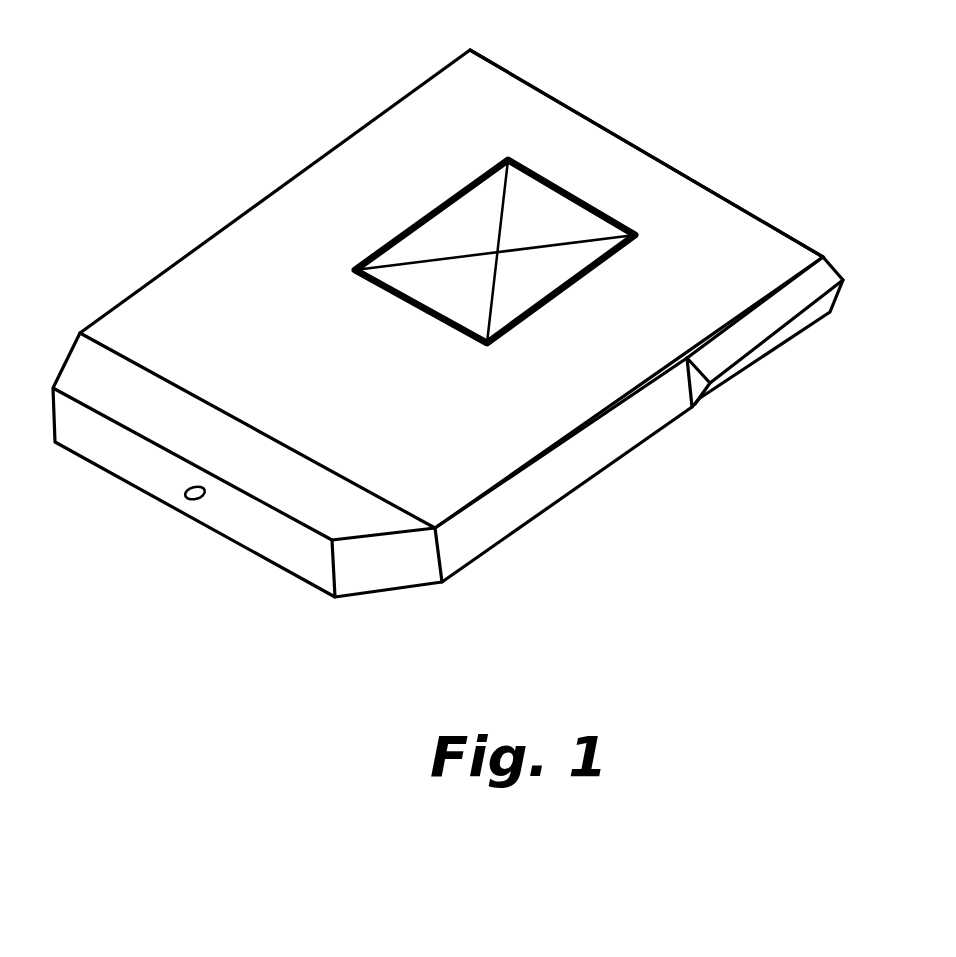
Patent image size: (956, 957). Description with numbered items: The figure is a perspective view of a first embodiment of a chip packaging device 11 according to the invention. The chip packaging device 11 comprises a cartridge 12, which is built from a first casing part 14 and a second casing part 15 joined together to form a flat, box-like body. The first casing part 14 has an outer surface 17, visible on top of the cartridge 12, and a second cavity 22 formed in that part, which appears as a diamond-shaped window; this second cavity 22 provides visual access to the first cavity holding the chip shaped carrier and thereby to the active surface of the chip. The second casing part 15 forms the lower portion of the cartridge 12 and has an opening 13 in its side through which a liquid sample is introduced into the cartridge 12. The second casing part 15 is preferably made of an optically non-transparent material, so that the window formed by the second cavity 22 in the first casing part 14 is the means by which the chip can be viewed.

The chip packaging device 11 is at (770, 110).
The cartridge 12 is at (240, 165).
The opening 13 is at (186, 496).
The first casing part 14 is at (470, 82).
The second casing part 15 is at (568, 497).
The outer surface 17 is at (722, 230).
The second cavity 22 is at (430, 245).